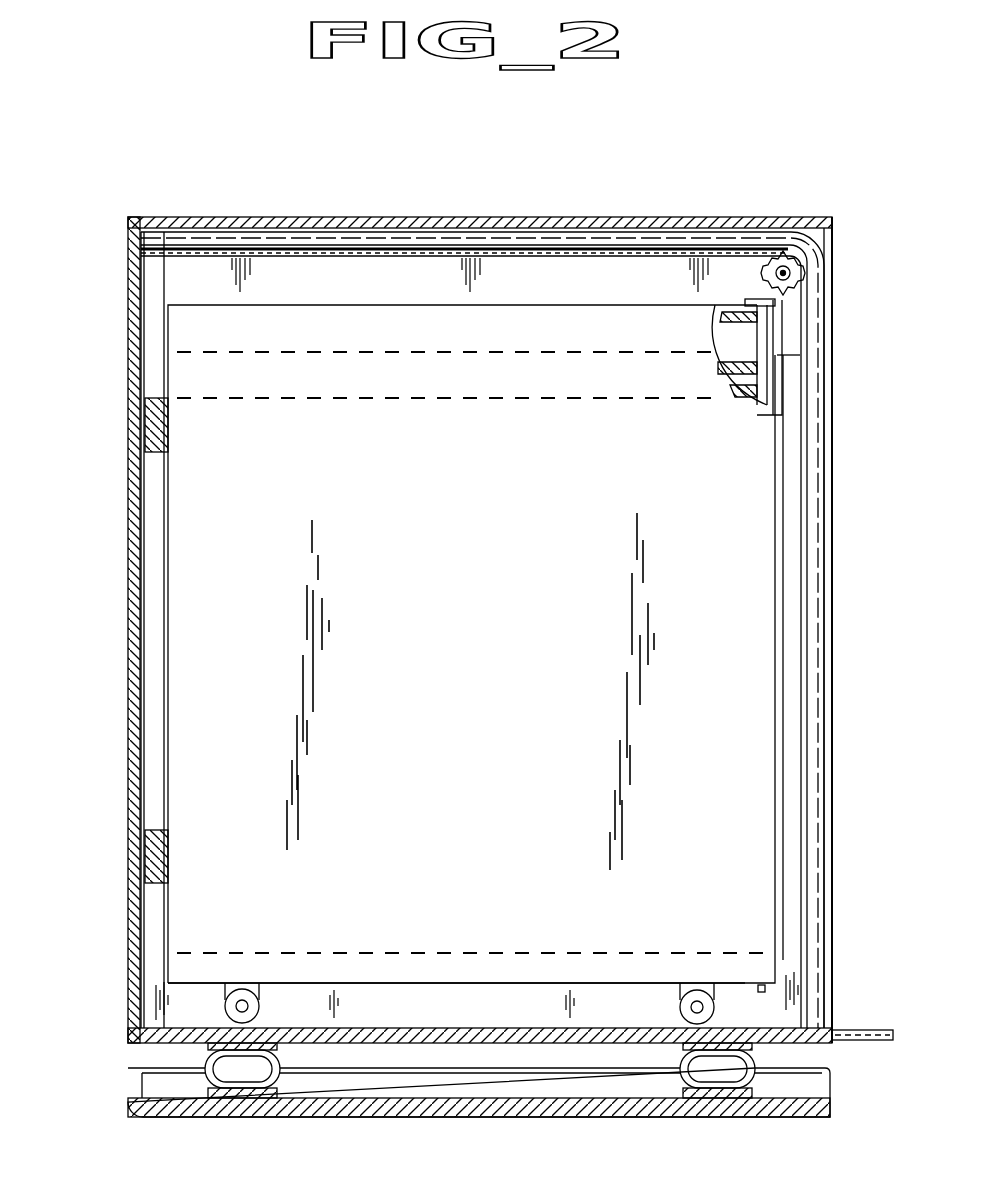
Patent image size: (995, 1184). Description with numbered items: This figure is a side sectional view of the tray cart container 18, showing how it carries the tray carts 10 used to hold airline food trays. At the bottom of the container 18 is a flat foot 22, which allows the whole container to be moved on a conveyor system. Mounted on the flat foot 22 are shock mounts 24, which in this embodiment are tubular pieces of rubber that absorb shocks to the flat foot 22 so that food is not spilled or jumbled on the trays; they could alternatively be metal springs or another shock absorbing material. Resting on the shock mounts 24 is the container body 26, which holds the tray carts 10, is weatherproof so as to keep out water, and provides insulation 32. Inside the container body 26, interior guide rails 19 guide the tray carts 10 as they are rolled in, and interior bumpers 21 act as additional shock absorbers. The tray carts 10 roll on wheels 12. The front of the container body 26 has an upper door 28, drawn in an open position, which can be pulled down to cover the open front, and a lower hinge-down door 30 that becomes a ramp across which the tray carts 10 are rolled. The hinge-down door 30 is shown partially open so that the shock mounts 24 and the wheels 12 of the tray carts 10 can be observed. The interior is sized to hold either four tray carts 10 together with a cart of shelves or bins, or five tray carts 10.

The tray cart 10 is at (485, 673).
The wheels 12 is at (240, 1010).
The tray cart container 18 is at (700, 200).
The interior guide rails 19 is at (165, 290).
The interior bumpers 21 is at (160, 427).
The flat foot 22 is at (135, 1095).
The shock mounts 24 is at (280, 1078).
The container body 26 is at (322, 217).
The upper door 28 is at (607, 250).
The lower hinge-down door 30 is at (868, 1042).
The insulation 32 is at (140, 656).